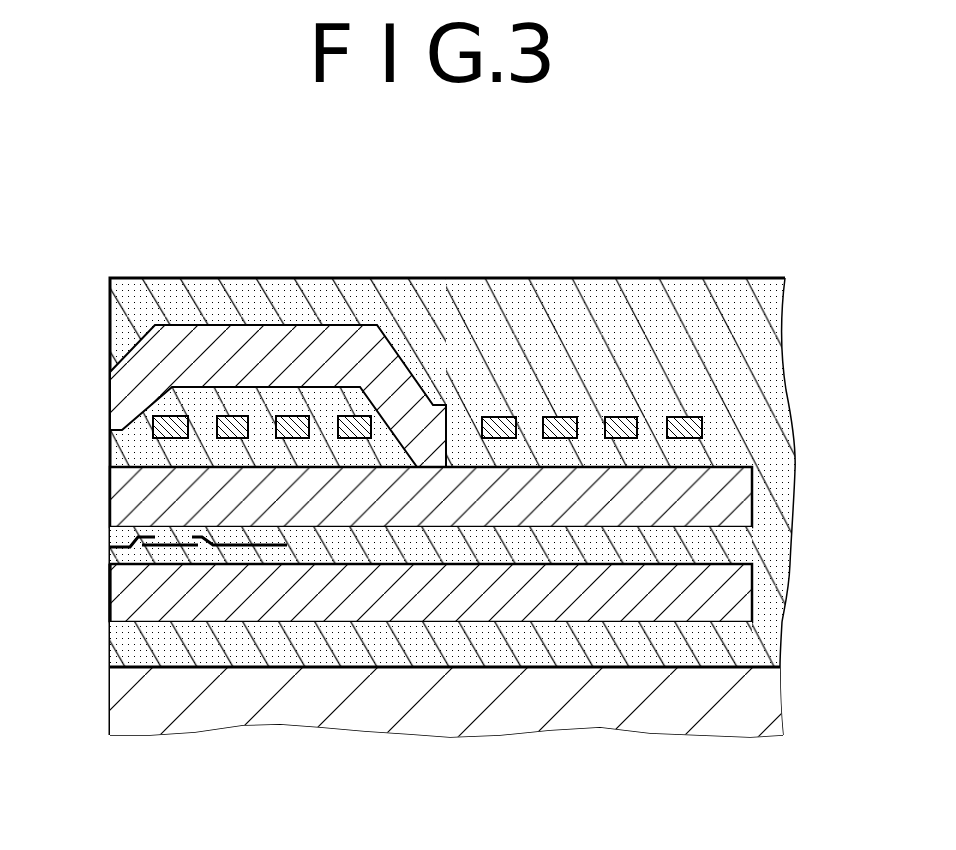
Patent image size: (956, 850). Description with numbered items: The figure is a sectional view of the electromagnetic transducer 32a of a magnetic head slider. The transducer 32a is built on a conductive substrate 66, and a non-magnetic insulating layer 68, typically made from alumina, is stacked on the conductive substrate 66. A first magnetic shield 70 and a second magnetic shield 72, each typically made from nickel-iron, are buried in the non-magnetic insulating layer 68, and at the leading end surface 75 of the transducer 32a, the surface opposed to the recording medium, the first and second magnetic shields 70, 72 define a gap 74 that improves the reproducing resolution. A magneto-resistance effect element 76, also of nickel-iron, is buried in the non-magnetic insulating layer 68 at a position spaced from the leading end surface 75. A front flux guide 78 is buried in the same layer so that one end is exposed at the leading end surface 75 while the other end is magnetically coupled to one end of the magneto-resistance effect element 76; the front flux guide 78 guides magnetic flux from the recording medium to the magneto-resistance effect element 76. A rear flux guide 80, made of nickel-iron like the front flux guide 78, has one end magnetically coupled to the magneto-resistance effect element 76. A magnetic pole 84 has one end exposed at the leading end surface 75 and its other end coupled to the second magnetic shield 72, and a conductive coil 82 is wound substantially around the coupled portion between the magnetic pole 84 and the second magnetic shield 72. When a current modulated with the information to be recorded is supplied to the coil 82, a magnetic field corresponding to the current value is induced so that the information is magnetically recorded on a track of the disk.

The electromagnetic transducer 32a is at (662, 266).
The conductive substrate 66 is at (442, 715).
The non-magnetic insulating layer 68 is at (753, 648).
The first magnetic shield 70 is at (730, 591).
The second magnetic shield 72 is at (738, 493).
The gap 74 is at (102, 565).
The leading end surface 75 is at (108, 600).
The magneto-resistance effect element 76 is at (158, 550).
The front flux guide 78 is at (133, 537).
The rear flux guide 80 is at (262, 548).
The conductive coil 82 is at (273, 433).
The magnetic pole 84 is at (301, 332).